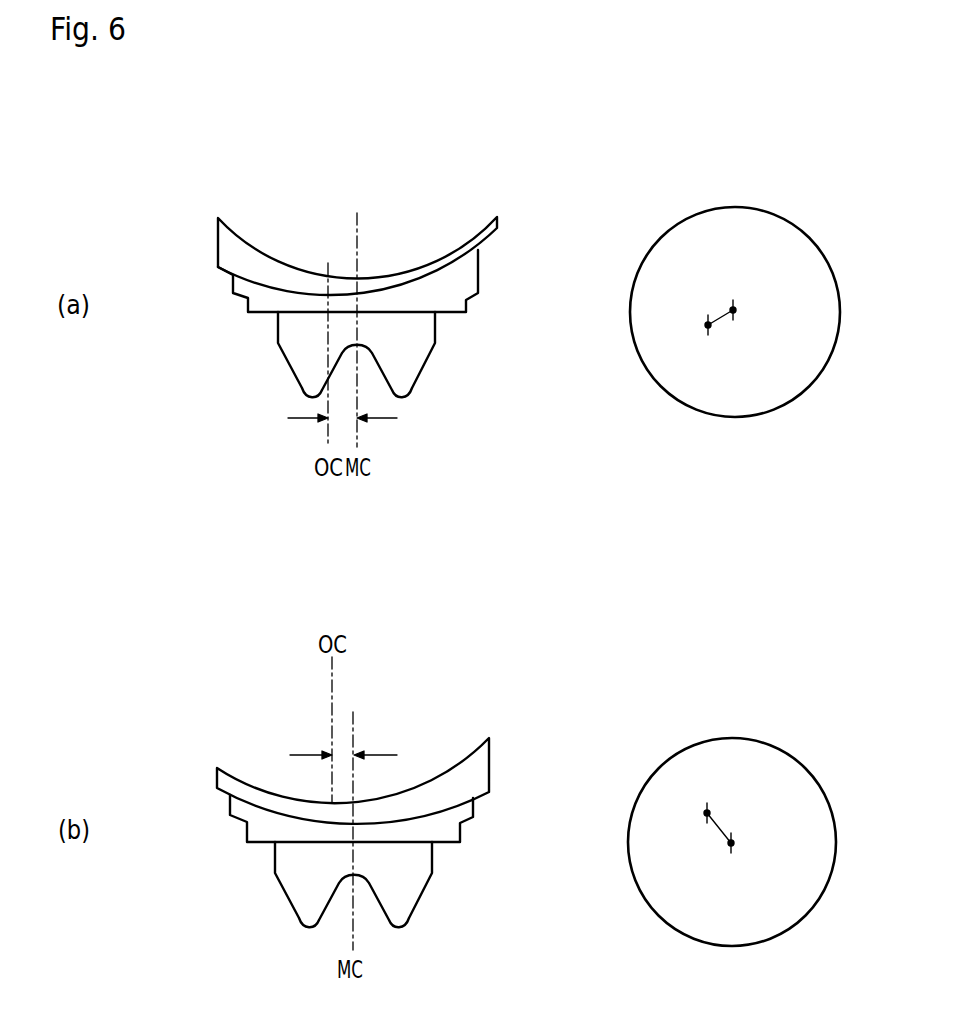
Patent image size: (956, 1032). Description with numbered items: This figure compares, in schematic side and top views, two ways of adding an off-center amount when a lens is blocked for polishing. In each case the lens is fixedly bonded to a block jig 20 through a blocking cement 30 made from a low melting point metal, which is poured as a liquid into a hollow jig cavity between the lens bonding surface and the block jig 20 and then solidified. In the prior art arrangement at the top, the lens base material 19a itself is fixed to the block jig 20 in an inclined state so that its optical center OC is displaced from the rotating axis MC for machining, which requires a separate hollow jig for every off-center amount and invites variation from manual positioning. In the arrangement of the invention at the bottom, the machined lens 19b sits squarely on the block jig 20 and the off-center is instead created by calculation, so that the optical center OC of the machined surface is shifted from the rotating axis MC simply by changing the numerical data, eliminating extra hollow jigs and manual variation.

The lens base material 19a is at (218, 243).
The machined lens 19b is at (489, 763).
The blocking cement 30 is at (480, 272).
The block jig 20 is at (430, 357).